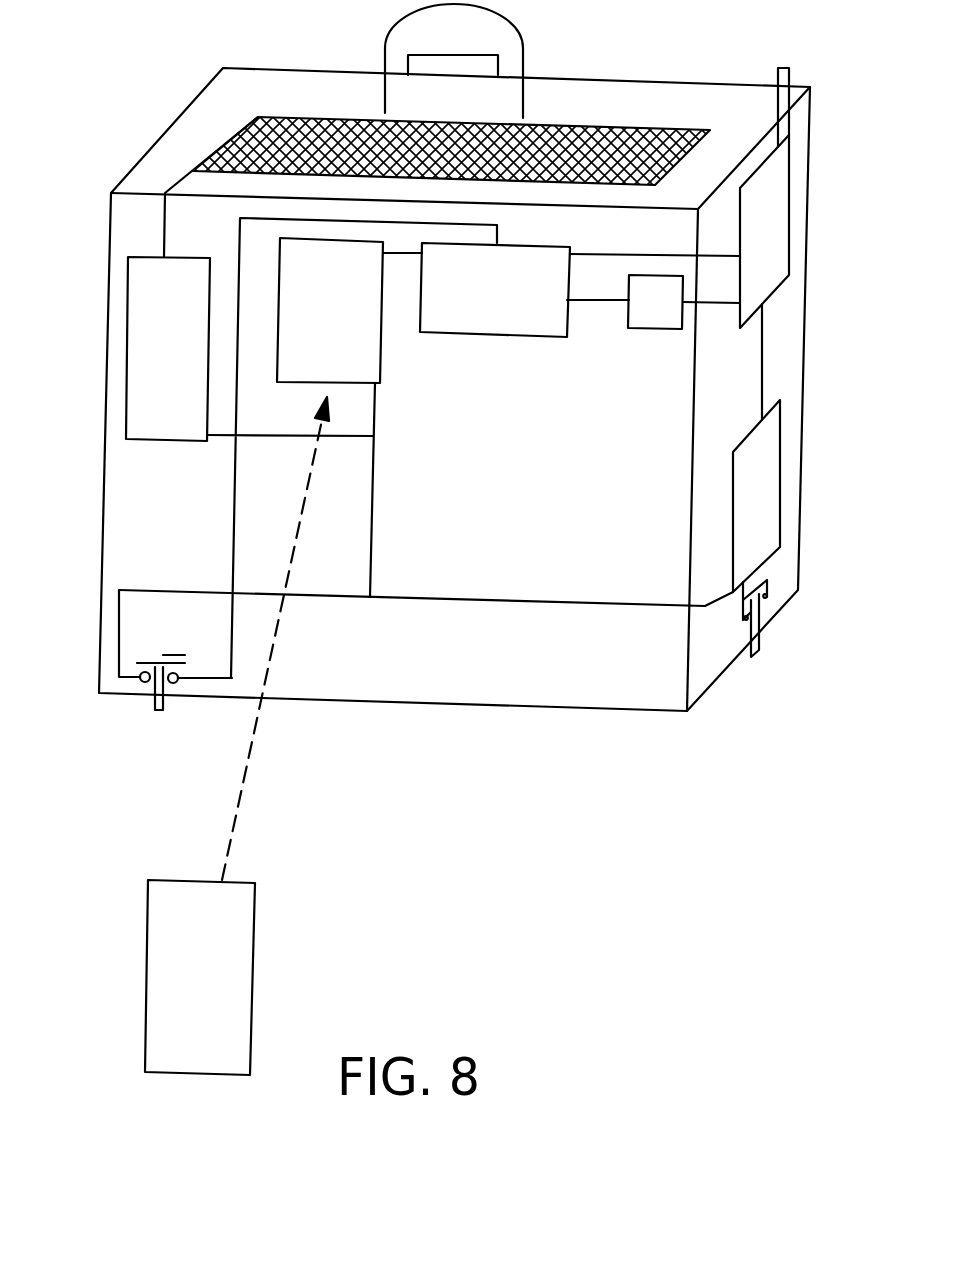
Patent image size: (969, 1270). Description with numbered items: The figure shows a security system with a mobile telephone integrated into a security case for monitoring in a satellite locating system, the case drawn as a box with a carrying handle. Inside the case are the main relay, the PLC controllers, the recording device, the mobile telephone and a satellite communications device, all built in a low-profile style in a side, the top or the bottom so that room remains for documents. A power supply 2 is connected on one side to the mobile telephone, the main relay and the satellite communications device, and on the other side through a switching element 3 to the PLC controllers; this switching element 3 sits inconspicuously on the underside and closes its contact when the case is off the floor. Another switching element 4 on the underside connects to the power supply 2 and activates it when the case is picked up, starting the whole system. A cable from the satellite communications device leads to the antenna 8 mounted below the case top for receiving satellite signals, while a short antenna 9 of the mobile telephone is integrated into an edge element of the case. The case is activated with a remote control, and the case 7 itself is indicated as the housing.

The power supply 2 is at (760, 540).
The switching element 3 is at (153, 703).
The switching element 4 is at (760, 652).
The housing 7 is at (562, 717).
The antenna 8 is at (225, 158).
The short antenna 9 is at (792, 70).